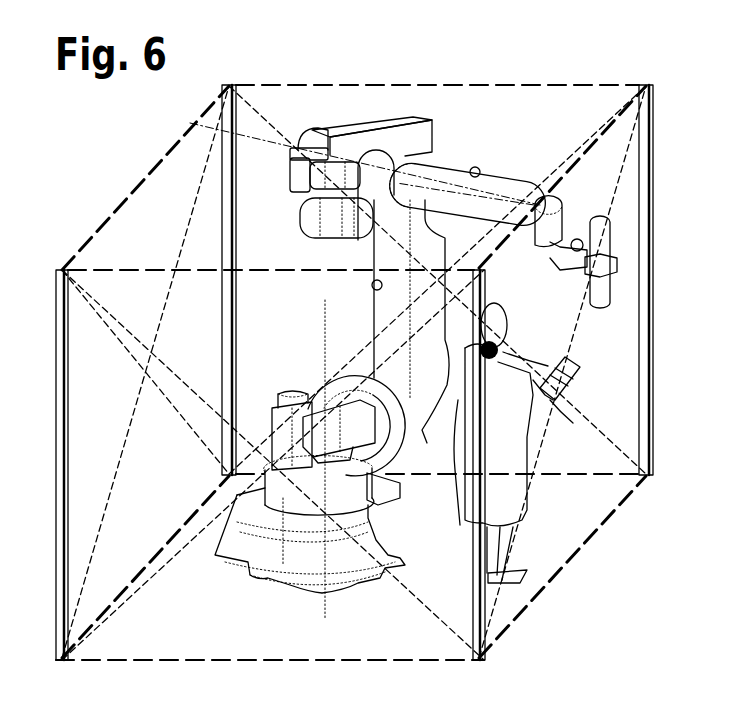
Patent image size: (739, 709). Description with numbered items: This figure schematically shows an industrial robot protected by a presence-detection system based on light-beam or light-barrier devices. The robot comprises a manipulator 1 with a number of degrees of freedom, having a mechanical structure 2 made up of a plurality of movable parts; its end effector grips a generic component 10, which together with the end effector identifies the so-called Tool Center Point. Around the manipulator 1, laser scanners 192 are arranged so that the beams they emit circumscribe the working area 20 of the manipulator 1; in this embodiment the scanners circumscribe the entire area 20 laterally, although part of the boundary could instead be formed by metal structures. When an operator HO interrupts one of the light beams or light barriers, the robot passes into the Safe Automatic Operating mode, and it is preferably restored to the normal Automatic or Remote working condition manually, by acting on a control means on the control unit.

The manipulator 1 is at (352, 291).
The mechanical structure 2 is at (498, 165).
The component 10 is at (602, 302).
The laser scanners 192 is at (231, 80).
The working area 20 is at (154, 158).
The operator HO is at (512, 508).